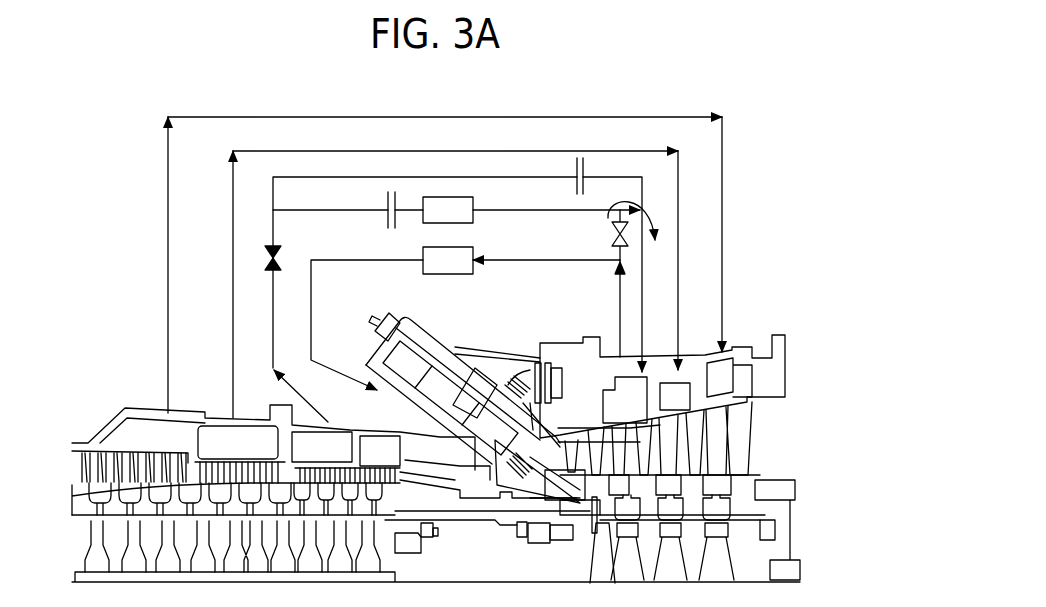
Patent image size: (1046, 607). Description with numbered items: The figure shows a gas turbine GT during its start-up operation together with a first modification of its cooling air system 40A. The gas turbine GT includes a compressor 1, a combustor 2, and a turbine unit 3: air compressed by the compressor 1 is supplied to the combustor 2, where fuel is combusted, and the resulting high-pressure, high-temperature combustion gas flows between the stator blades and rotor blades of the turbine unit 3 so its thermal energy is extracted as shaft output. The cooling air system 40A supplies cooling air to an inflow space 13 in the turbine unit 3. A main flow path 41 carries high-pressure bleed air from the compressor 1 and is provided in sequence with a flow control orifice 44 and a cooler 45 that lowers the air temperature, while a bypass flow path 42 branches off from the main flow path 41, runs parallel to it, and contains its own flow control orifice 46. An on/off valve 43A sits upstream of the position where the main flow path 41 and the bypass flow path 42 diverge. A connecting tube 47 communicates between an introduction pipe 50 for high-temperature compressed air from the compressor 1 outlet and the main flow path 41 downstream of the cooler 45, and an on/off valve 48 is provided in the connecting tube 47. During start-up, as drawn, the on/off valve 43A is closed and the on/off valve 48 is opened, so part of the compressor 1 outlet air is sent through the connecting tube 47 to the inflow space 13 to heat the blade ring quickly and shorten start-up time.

The compressor 1 is at (66, 460).
The combustor 2 is at (454, 352).
The turbine unit 3 is at (781, 445).
The inflow space 13 is at (642, 378).
The cooling air system 40A is at (663, 260).
The main flow path 41 is at (500, 211).
The bypass flow path 42 is at (530, 176).
The on/off valve 43A is at (278, 248).
The flow control orifice 44 is at (388, 216).
The cooler 45 is at (473, 200).
The flow control orifice 46 is at (586, 168).
The connecting tube 47 is at (618, 250).
The on/off valve 48 is at (612, 228).
The introduction pipe 50 is at (531, 262).
The gas turbine GT is at (748, 260).